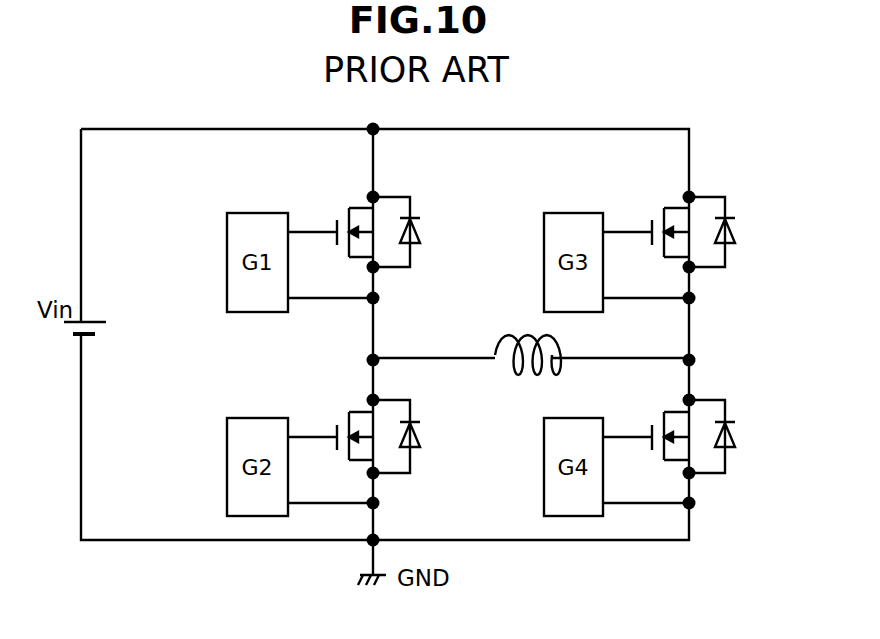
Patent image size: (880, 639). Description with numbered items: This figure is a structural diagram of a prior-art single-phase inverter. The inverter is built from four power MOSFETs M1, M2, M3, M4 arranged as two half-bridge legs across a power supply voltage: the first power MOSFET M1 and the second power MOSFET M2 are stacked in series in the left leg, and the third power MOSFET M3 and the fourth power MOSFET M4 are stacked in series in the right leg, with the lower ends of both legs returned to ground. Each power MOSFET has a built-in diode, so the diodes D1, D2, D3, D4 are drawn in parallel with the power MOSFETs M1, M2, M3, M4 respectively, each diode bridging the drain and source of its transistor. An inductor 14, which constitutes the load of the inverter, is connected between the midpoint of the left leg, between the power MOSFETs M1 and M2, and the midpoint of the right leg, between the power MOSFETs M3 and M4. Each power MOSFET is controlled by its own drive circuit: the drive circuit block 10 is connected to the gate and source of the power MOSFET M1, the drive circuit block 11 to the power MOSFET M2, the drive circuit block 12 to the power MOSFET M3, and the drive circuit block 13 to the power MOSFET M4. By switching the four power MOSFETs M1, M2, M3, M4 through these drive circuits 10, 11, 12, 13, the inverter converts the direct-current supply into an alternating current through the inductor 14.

The gate driver G1 10 is at (254, 213).
The gate driver G2 11 is at (254, 418).
The gate driver G3 12 is at (544, 263).
The gate driver G4 13 is at (543, 477).
The inductor 14 is at (553, 356).
The power MOSFET M1 is at (370, 223).
The power MOSFET M2 is at (370, 428).
The power MOSFET M3 is at (677, 223).
The power MOSFET M4 is at (686, 430).
The diode D1 is at (417, 233).
The diode D2 is at (417, 437).
The diode D3 is at (732, 233).
The diode D4 is at (728, 437).